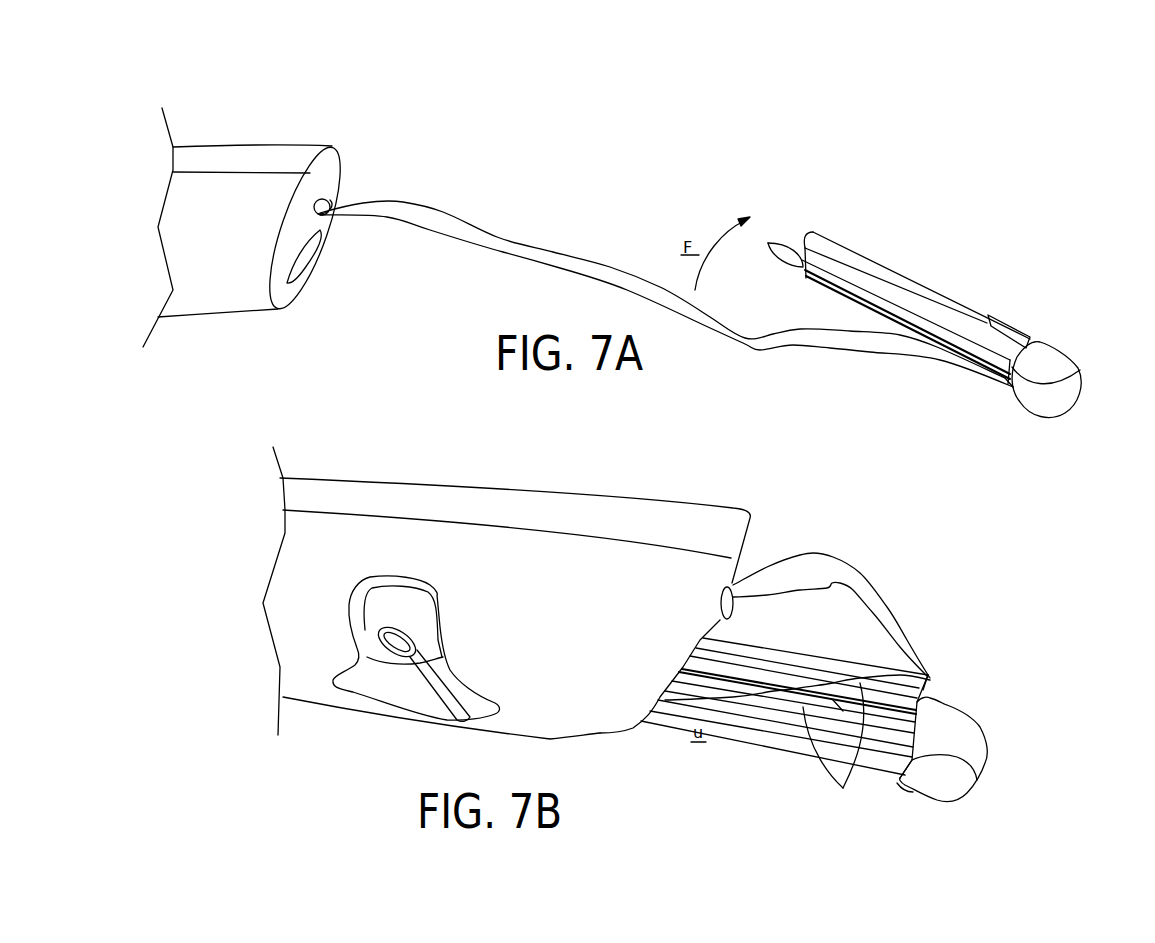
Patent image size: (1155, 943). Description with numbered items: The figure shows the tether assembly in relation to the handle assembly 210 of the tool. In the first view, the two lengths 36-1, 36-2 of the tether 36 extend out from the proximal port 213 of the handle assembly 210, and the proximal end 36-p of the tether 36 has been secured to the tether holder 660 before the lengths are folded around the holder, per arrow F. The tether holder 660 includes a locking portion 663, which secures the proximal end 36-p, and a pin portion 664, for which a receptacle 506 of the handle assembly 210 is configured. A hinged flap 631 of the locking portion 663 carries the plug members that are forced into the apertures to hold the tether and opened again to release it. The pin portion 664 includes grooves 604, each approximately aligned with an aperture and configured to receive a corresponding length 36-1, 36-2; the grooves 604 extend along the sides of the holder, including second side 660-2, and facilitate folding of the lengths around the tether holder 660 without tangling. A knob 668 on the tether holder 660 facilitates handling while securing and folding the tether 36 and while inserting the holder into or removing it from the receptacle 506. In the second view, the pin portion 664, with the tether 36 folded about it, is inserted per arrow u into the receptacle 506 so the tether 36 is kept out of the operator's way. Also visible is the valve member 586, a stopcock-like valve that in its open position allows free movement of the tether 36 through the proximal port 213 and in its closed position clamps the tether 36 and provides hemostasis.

In FIG. 7A, the handle assembly 210 is at (267, 206).
In FIG. 7B, the handle assembly 210 is at (517, 572).
In FIG. 7A, the proximal port 213 is at (337, 193).
In FIG. 7B, the proximal port 213 is at (734, 606).
In FIG. 7A, the receptacle 506 is at (310, 267).
In FIG. 7A, the tether 36 is at (666, 282).
In FIG. 7B, the tether 36 is at (797, 610).
In FIG. 7A, the first length of tether 36-1 is at (443, 212).
In FIG. 7B, the first length of tether 36-1 is at (817, 552).
In FIG. 7A, the second length of tether 36-2 is at (430, 233).
In FIG. 7B, the second length of tether 36-2 is at (857, 595).
In FIG. 7A, the proximal end of tether 36-p is at (958, 381).
In FIG. 7A, the tether holder 660 is at (933, 297).
In FIG. 7B, the tether holder 660 is at (862, 732).
In FIG. 7A, the second side of tether holder 660-2 is at (819, 285).
In FIG. 7A, the pin portion 664 is at (910, 258).
In FIG. 7B, the pin portion 664 is at (745, 768).
In FIG. 7A, the groove 604 is at (768, 243).
In FIG. 7B, the groove 604 is at (853, 703).
In FIG. 7A, the hinged flap 631 is at (1003, 320).
In FIG. 7B, the hinged flap 631 is at (897, 717).
In FIG. 7A, the knob 668 is at (1063, 400).
In FIG. 7B, the knob 668 is at (973, 737).
In FIG. 7B, the valve member 586 is at (418, 618).
In FIG. 7B, the locking portion 663 is at (877, 813).